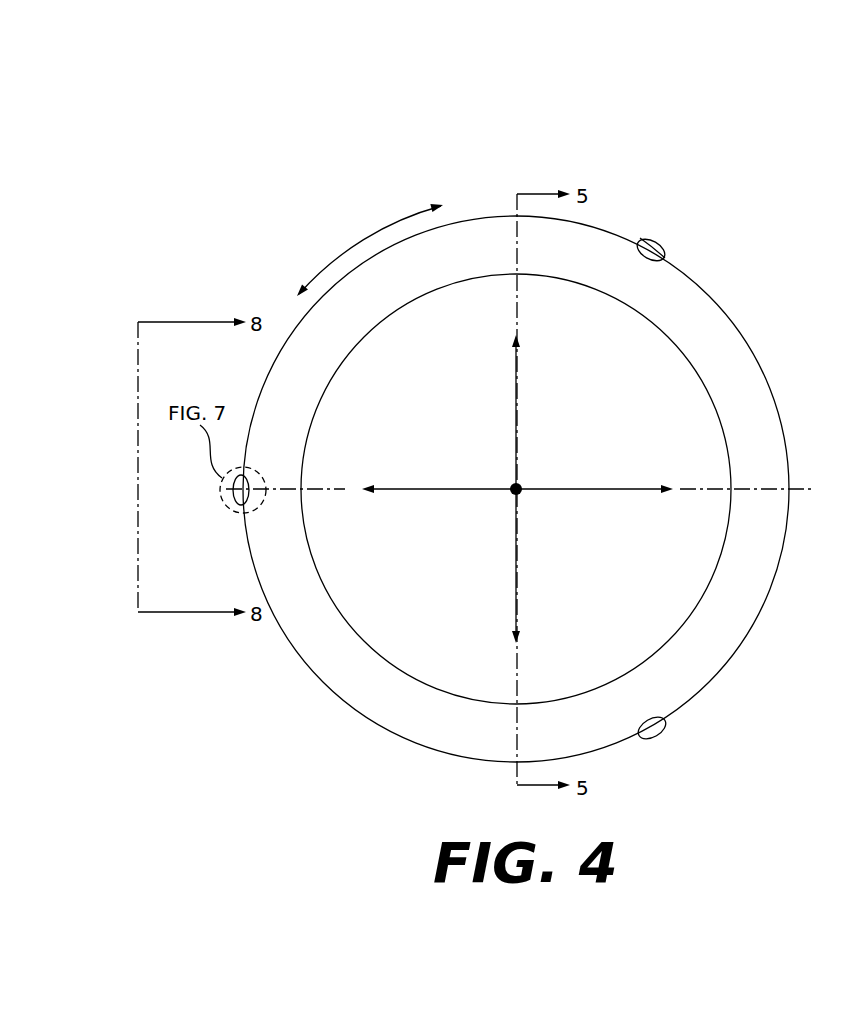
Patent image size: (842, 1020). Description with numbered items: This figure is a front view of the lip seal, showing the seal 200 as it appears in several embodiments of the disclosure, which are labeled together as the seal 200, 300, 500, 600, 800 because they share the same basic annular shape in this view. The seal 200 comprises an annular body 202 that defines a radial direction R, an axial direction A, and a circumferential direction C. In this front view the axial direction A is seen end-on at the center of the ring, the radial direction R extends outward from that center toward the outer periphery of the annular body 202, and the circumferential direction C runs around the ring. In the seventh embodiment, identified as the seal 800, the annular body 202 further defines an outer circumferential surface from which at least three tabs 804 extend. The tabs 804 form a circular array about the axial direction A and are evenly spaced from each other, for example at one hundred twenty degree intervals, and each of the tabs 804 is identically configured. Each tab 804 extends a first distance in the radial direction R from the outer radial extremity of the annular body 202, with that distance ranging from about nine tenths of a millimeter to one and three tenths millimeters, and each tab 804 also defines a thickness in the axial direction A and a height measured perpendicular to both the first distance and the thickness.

The seal 200 is at (521, 431).
The ring assembly 300 is at (521, 431).
The ring assembly 500 is at (521, 431).
The ring assembly 600 is at (521, 431).
The seal 800 is at (590, 147).
The annular body 202 is at (683, 217).
The tabs 804 is at (660, 252).
The axial direction A is at (522, 496).
The radial direction R is at (519, 370).
The circumferential direction C is at (353, 245).